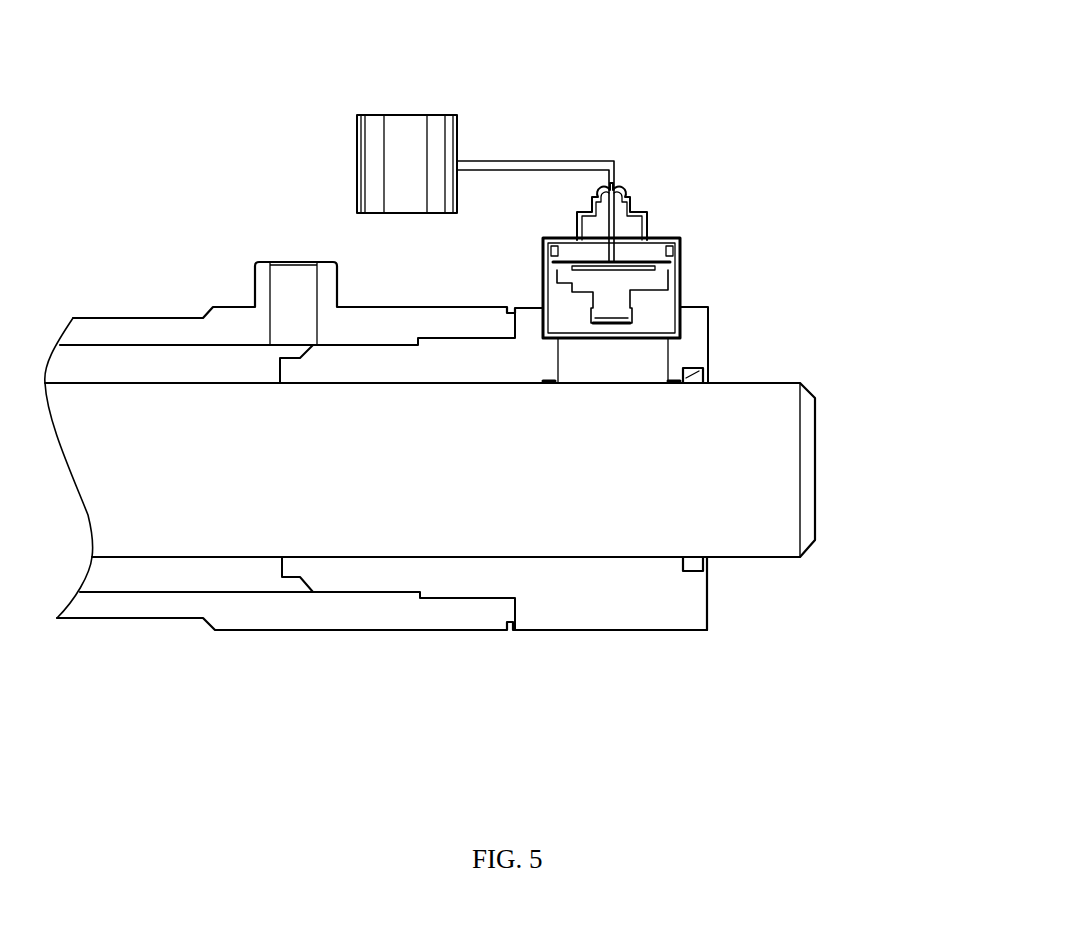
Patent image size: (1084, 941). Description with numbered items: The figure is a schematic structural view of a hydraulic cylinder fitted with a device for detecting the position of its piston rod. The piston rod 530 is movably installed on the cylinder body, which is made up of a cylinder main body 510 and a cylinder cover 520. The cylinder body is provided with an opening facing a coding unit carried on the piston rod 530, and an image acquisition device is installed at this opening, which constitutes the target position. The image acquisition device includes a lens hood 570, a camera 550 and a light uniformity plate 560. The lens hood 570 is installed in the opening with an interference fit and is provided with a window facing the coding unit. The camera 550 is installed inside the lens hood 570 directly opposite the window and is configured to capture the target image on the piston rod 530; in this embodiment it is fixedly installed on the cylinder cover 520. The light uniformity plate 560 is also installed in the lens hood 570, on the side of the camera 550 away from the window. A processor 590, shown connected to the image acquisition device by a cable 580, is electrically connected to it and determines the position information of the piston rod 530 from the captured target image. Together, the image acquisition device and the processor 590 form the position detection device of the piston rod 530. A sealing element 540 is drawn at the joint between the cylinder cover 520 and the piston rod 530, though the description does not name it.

The cylinder main body 510 is at (360, 608).
The cylinder cover 520 is at (508, 575).
The piston rod 530 is at (705, 505).
The seal ring 540 is at (703, 373).
The camera 550 is at (615, 308).
The light uniformity plate 560 is at (643, 260).
The lens hood 570 is at (630, 205).
The cable 580 is at (533, 163).
The processor 590 is at (393, 153).